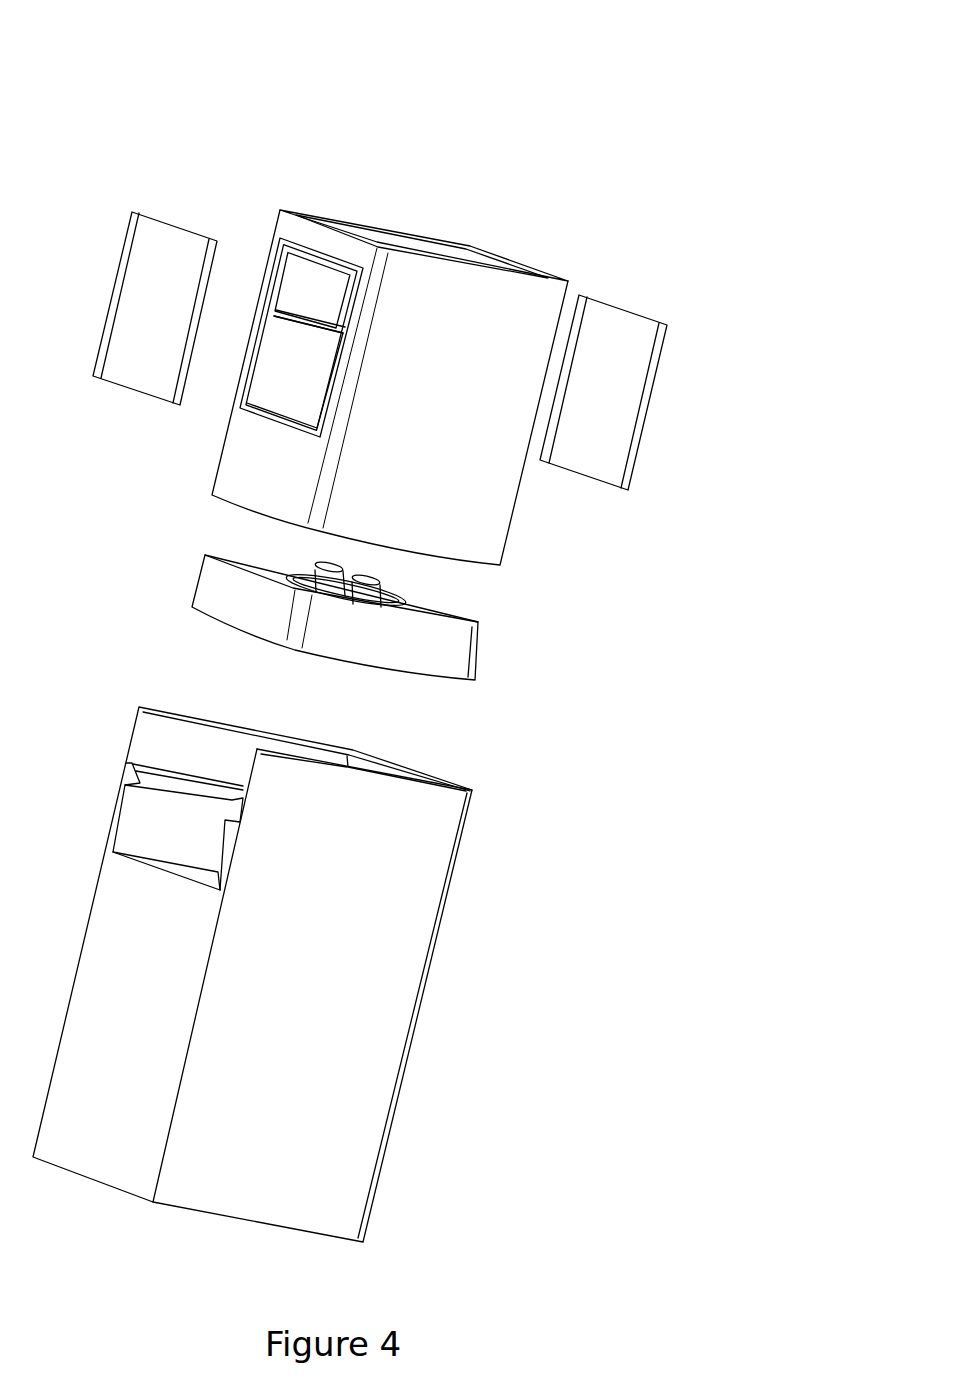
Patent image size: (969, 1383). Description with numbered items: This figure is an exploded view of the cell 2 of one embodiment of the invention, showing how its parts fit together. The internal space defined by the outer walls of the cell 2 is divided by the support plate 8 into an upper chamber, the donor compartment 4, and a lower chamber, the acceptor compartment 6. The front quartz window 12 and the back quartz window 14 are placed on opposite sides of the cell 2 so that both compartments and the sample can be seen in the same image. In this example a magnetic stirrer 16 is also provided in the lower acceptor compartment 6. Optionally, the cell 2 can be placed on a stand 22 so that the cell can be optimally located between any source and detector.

The cell 2 is at (370, 172).
The donor compartment 4 is at (302, 290).
The acceptor compartment 6 is at (310, 325).
The support plate 8 is at (330, 362).
The front quartz window 12 is at (163, 248).
The back quartz window 14 is at (602, 358).
The magnetic stirrer 16 is at (442, 647).
The stand 22 is at (365, 975).